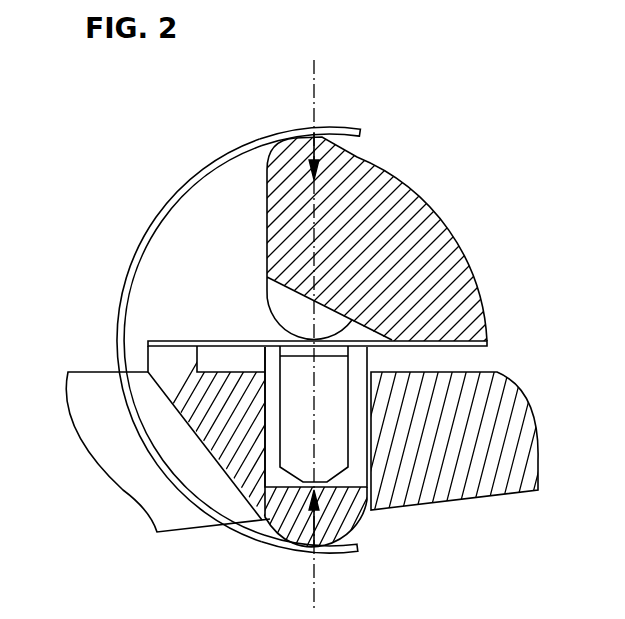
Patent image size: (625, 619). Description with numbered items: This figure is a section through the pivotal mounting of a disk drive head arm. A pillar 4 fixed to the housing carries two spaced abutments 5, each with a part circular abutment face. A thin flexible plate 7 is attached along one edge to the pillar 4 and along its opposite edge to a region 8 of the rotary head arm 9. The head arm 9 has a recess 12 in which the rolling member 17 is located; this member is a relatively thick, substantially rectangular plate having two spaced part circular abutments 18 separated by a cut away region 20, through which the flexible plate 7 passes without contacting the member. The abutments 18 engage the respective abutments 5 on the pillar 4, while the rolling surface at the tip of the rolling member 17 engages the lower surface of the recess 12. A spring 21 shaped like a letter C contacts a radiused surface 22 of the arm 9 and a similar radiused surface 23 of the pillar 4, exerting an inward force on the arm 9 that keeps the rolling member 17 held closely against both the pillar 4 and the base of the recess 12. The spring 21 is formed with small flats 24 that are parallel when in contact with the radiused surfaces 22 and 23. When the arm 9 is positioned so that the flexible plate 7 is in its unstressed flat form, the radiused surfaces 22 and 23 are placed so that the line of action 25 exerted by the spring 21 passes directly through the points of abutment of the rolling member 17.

The pillar 4 is at (438, 245).
The abutments 5 is at (267, 309).
The flexible plate 7 is at (217, 341).
The region of the rotary arm 8 is at (148, 342).
The head arm 9 is at (483, 395).
The recess 12 is at (275, 407).
The rolling member 17 is at (323, 385).
The abutments 18 is at (288, 338).
The cut away region 20 is at (318, 348).
The spring 21 is at (135, 266).
The radiused surface 22 is at (358, 520).
The radiused surface 23 is at (283, 146).
The flats 24 is at (331, 128).
The line of action 25 is at (307, 250).